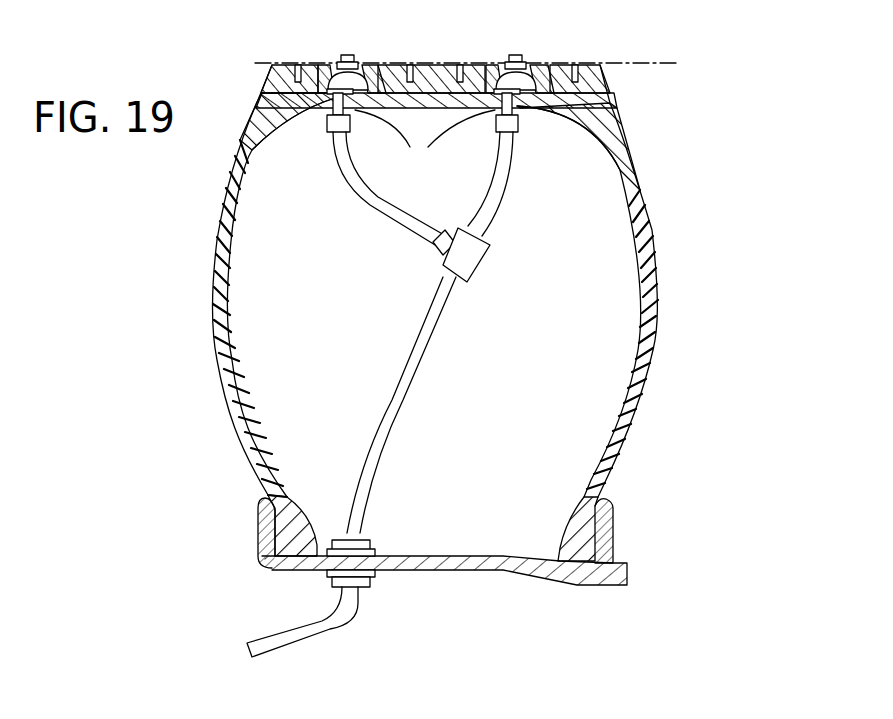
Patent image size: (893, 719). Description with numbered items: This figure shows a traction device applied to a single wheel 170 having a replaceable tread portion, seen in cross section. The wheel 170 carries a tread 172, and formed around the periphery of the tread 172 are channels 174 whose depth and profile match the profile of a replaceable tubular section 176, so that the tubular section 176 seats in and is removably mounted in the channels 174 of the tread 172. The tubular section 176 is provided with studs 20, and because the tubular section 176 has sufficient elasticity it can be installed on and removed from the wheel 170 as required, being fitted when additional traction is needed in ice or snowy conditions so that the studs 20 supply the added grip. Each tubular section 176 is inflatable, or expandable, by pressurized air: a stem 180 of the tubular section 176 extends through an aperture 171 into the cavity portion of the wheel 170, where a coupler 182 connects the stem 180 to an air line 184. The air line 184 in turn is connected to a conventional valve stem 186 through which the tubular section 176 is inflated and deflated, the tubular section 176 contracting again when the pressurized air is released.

The wheel 170 is at (220, 233).
The tread 172 is at (441, 62).
The channels 174 is at (330, 62).
The tubular section 176 is at (366, 61).
The studs 20 is at (347, 57).
The aperture 171 is at (330, 99).
The coupler 182 is at (328, 133).
The stem 180 is at (425, 141).
The air line 184 is at (372, 197).
The valve stem 186 is at (283, 632).